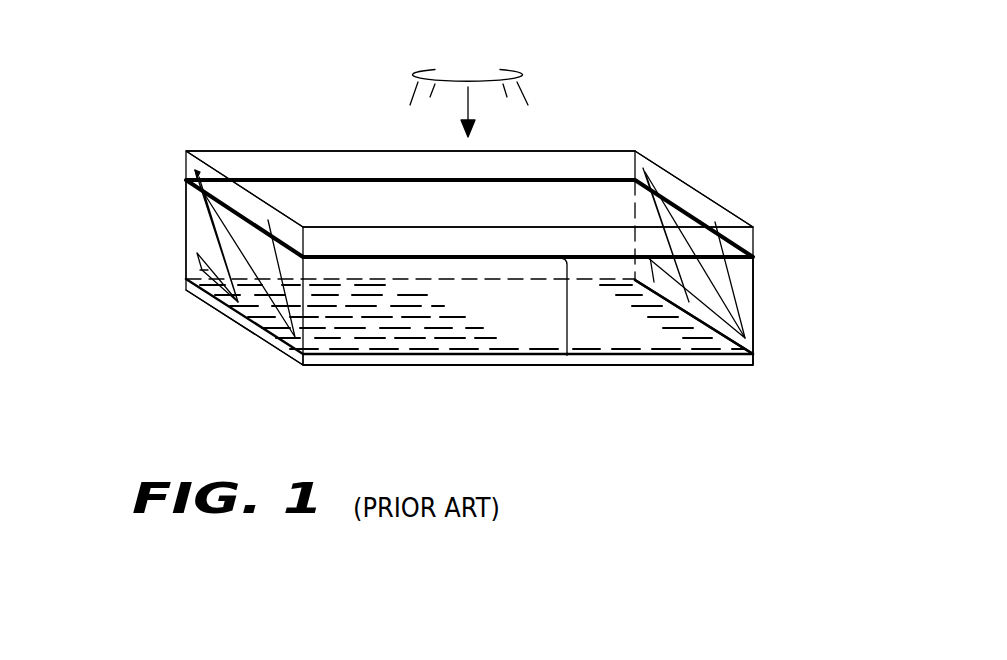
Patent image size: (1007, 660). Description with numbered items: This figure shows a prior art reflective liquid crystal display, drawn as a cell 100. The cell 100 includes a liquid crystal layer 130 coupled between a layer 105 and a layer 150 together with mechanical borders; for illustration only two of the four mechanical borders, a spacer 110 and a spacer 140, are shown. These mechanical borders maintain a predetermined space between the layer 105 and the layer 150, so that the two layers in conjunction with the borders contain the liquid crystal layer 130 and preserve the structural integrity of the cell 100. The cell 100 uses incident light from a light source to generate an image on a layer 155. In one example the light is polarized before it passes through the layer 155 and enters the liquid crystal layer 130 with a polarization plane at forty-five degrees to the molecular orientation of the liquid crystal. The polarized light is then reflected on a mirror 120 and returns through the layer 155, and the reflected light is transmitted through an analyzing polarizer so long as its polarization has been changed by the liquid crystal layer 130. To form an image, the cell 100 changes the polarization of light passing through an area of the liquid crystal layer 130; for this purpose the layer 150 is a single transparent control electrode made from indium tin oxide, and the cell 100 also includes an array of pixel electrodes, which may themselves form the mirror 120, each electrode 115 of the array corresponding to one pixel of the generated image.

The cell 100 is at (590, 107).
The spacer 110 is at (160, 250).
The layer 155 is at (253, 157).
The layer 150 is at (187, 183).
The layer 105 is at (187, 287).
The electrode 115 is at (405, 350).
The mirror 120 is at (517, 367).
The spacer 140 is at (753, 288).
The liquid crystal layer 130 is at (568, 310).